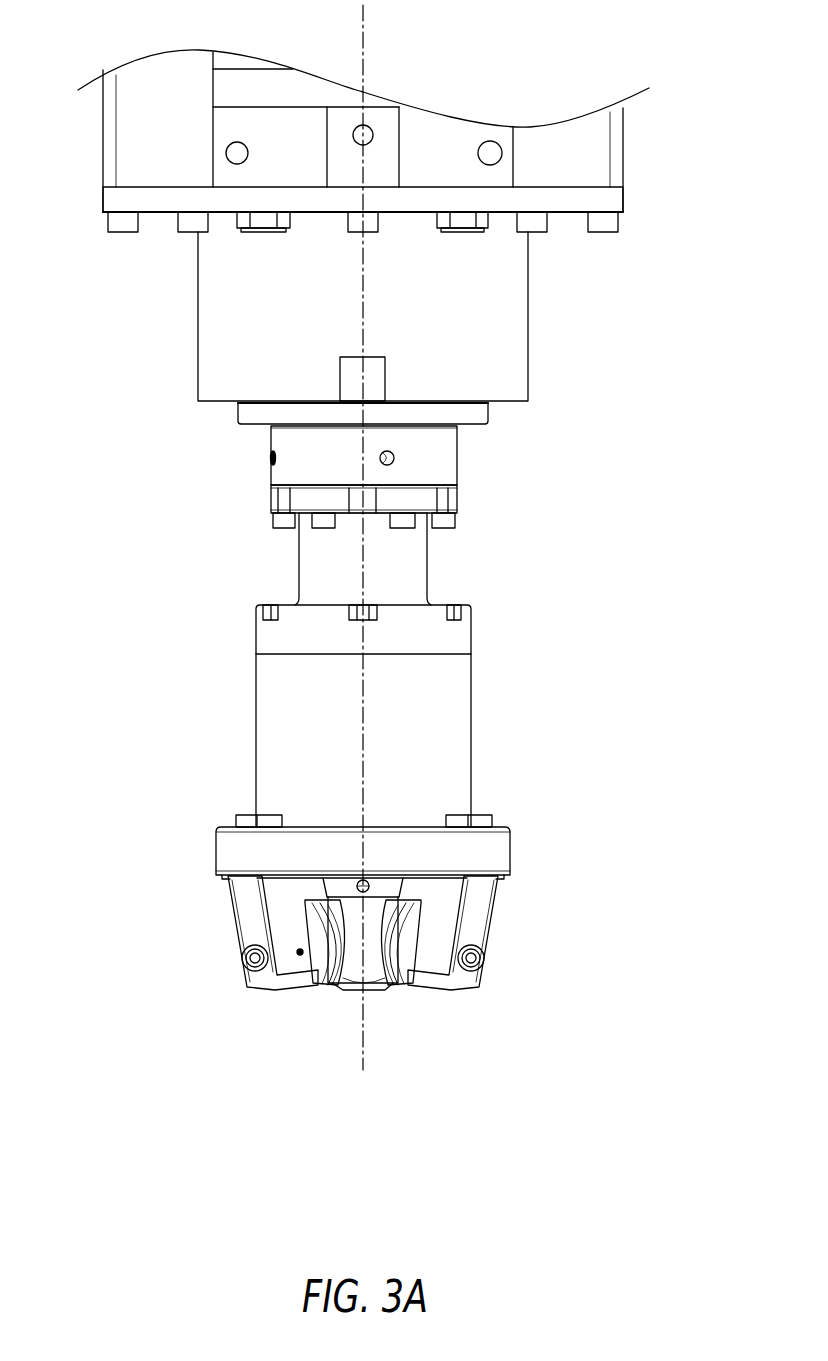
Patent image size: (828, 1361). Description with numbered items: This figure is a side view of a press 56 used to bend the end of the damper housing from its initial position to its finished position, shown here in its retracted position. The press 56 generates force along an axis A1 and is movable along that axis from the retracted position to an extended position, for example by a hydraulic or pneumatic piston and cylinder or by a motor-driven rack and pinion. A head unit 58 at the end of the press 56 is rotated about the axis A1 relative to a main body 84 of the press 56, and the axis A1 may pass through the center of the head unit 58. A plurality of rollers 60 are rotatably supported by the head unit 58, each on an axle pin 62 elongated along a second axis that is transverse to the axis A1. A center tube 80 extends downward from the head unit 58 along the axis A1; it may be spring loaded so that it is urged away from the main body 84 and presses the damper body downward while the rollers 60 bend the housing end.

The axis A1 is at (363, 40).
The press 56 is at (572, 744).
The head unit 58 is at (498, 855).
The rollers 60 is at (326, 985).
The axle pin 62 is at (240, 958).
The center tube 80 is at (353, 967).
The main body 84 is at (472, 707).